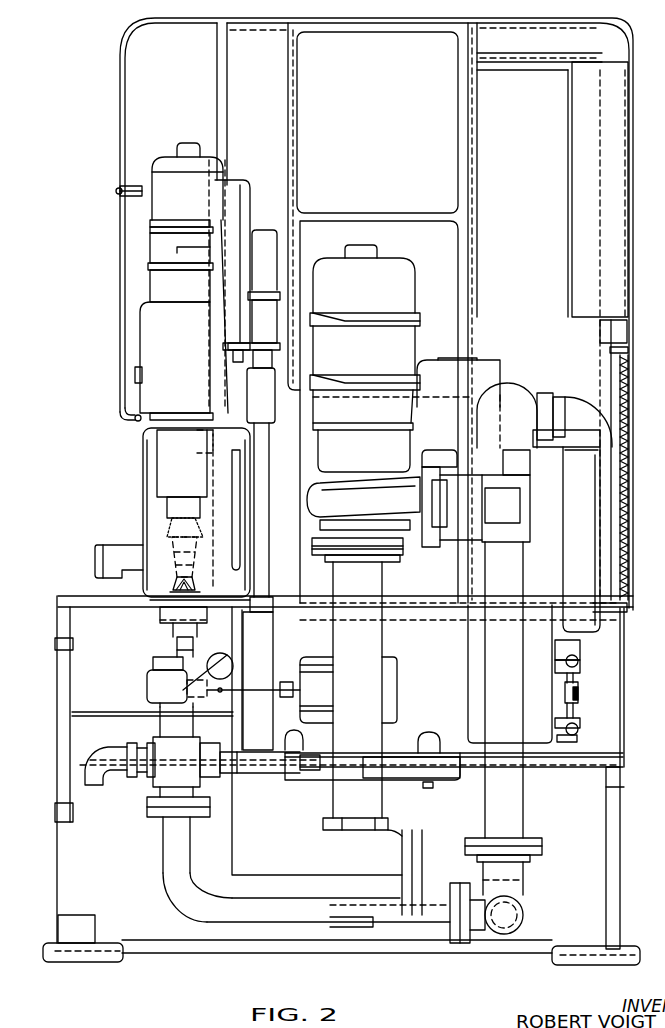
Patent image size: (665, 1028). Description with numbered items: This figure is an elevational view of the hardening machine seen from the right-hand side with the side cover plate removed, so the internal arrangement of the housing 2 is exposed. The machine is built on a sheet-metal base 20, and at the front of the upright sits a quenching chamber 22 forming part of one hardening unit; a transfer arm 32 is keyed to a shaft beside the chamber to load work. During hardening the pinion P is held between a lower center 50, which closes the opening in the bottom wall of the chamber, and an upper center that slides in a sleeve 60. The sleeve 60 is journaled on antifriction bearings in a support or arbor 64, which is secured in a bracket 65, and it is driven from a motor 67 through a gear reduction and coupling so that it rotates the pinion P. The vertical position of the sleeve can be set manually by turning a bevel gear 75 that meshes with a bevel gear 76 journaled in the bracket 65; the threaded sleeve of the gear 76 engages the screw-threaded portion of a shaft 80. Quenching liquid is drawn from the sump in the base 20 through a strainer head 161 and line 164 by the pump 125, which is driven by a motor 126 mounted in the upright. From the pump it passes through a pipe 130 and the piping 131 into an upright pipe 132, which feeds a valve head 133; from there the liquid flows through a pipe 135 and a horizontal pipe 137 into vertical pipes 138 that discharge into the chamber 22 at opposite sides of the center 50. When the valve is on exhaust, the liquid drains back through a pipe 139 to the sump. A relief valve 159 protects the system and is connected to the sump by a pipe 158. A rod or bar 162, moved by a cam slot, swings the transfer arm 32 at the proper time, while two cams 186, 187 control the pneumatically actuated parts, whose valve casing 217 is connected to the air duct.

The housing 2 is at (578, 366).
The base 20 is at (68, 872).
The quenching chamber 22 is at (152, 497).
The transfer arm 32 is at (107, 545).
The lower center 50 is at (180, 593).
The sleeve 60 is at (180, 508).
The support or arbor 64 is at (165, 460).
The bracket 65 is at (153, 347).
The motor 67 is at (158, 184).
The bevel gear 75 is at (241, 365).
The bevel gear 76 is at (260, 358).
The shaft 80 is at (260, 558).
The pump 125 is at (305, 488).
The motor 126 is at (405, 285).
The pipe 130 is at (515, 800).
The piping 131 is at (260, 910).
The upright pipe 132 is at (166, 857).
The valve head 133 is at (160, 748).
The pipe 135 is at (196, 698).
The horizontal pipe 137 is at (222, 666).
The vertical pipe 138 is at (225, 634).
The pipe 139 is at (107, 775).
The pipe 158 is at (575, 570).
The relief valve 159 is at (523, 404).
The strainer head 161 is at (340, 842).
The rod or bar 162 is at (247, 690).
The line 164 is at (343, 730).
The cam 186 is at (568, 690).
The cam 187 is at (580, 684).
The valve casing 217 is at (577, 657).
The pinion P is at (175, 548).